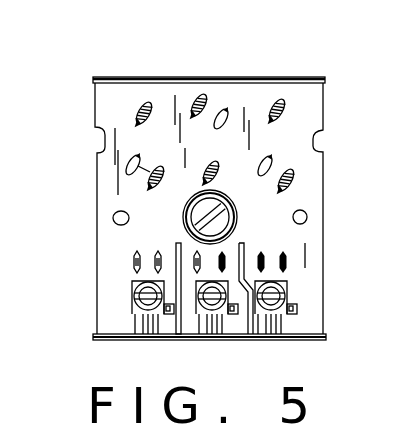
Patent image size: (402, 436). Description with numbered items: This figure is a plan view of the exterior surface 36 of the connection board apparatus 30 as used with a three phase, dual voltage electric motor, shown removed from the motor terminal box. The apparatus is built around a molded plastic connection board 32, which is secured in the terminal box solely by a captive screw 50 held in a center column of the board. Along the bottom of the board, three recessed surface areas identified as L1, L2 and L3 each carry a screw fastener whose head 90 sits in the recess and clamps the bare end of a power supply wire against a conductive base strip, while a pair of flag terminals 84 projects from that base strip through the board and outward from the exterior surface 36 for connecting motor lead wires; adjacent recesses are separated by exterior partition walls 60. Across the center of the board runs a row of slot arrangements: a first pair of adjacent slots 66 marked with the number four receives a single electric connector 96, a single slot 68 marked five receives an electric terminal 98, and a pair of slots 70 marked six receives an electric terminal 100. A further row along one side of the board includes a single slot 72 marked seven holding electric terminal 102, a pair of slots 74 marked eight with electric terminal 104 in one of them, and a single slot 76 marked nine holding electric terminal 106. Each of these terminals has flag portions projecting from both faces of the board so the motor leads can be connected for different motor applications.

The connection board apparatus 30 is at (223, 46).
The connection board 32 is at (113, 221).
The exterior surface 36 is at (118, 240).
The screw 50 is at (222, 227).
The exterior partition walls 60 is at (182, 335).
The first pair of adjacent slots 66 is at (118, 194).
The single slot 68 is at (238, 190).
The pair of slots 70 is at (310, 140).
The single slot 72 is at (126, 88).
The pair of slots 74 is at (217, 88).
The single slot 76 is at (305, 72).
The flag terminals 84 is at (112, 286).
The head 90 is at (135, 314).
The electric connector 96 is at (128, 165).
The electric terminal 98 is at (212, 172).
The electric terminal 100 is at (290, 182).
The electric terminal 102 is at (137, 123).
The electric terminal 104 is at (192, 104).
The electric terminal 106 is at (272, 108).